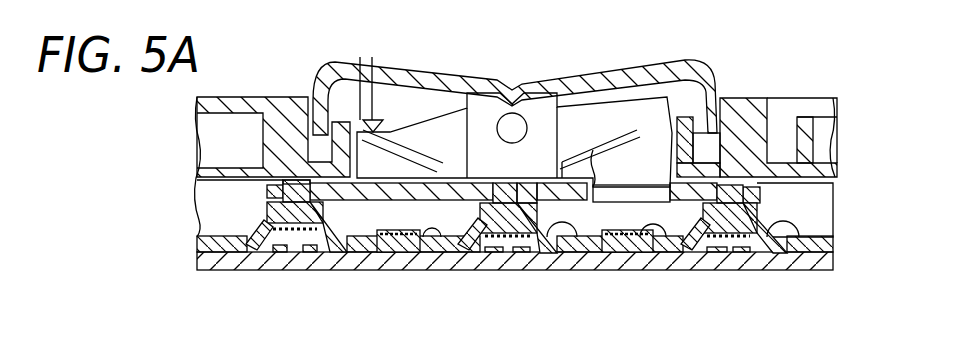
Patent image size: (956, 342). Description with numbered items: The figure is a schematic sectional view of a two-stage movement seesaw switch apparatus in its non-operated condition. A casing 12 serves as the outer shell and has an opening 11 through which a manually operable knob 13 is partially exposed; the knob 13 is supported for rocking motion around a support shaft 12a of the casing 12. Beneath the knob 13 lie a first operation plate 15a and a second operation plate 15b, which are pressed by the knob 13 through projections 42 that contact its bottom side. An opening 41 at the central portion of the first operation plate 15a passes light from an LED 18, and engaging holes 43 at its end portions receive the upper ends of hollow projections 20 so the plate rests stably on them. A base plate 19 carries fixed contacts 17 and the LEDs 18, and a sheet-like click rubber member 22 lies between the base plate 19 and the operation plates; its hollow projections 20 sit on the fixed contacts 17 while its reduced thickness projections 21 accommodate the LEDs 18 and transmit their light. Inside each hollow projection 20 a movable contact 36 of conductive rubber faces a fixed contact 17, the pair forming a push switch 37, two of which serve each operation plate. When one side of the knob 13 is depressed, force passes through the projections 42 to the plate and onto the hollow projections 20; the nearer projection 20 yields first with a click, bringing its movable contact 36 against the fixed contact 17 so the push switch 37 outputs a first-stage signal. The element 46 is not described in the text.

The opening 11 is at (712, 117).
The casing 12 is at (763, 88).
The support shaft 12a is at (510, 123).
The manually operable knob 13 is at (620, 66).
The first operation plate 15a is at (267, 193).
The second operation plate 15b is at (760, 195).
The fixed contact 17 is at (308, 253).
The LED 18 is at (392, 253).
The base plate 19 is at (840, 272).
The hollow projection 20 is at (266, 226).
The reduced thickness projection 21 is at (434, 240).
The click rubber member 22 is at (841, 242).
The movable contact 36 is at (327, 254).
The push switch 37 is at (262, 243).
The opening 41 is at (378, 192).
The projection 42 is at (514, 102).
The engaging hole 43 is at (514, 183).
The spring 46 is at (368, 118).